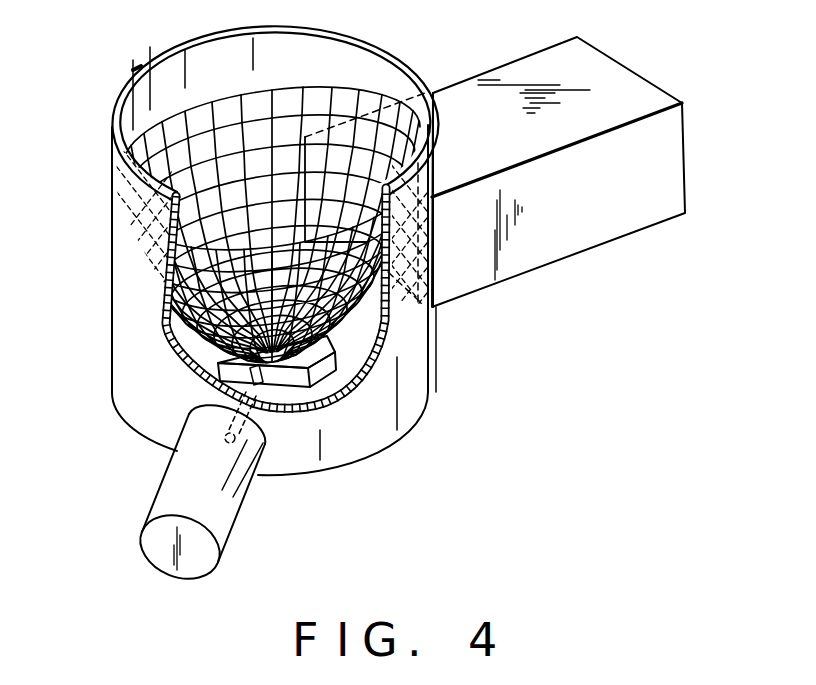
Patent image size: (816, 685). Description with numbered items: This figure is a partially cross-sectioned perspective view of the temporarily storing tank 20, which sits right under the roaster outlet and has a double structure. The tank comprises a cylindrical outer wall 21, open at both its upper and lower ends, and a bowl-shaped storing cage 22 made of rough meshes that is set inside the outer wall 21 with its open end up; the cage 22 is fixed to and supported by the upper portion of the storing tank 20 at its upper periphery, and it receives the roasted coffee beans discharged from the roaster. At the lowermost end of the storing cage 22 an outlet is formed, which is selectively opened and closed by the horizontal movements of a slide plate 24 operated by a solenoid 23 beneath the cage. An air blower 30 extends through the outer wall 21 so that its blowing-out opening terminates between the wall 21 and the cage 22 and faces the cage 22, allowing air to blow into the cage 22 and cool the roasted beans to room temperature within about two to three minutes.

The temporarily storing tank 20 is at (100, 194).
The cylindrical outer wall 21 is at (377, 43).
The storing cage 22 is at (388, 342).
The solenoid 23 is at (236, 540).
The slide plate 24 is at (340, 396).
The air blower 30 is at (613, 220).